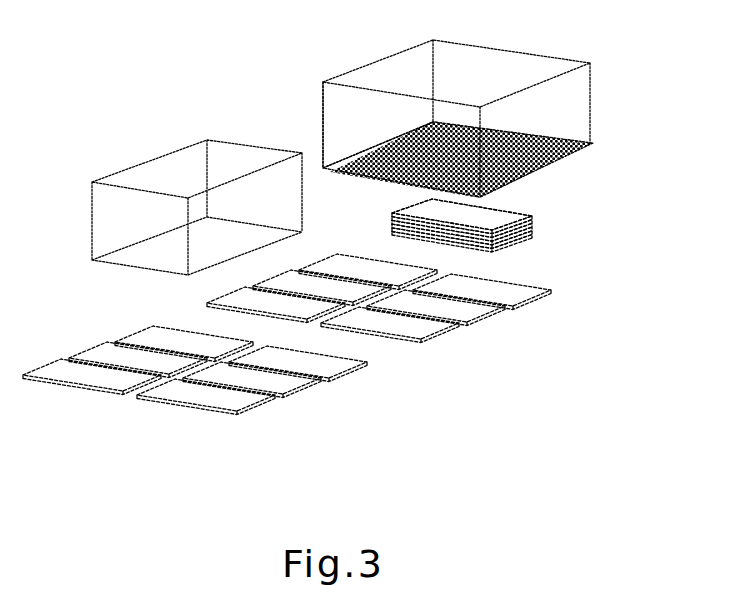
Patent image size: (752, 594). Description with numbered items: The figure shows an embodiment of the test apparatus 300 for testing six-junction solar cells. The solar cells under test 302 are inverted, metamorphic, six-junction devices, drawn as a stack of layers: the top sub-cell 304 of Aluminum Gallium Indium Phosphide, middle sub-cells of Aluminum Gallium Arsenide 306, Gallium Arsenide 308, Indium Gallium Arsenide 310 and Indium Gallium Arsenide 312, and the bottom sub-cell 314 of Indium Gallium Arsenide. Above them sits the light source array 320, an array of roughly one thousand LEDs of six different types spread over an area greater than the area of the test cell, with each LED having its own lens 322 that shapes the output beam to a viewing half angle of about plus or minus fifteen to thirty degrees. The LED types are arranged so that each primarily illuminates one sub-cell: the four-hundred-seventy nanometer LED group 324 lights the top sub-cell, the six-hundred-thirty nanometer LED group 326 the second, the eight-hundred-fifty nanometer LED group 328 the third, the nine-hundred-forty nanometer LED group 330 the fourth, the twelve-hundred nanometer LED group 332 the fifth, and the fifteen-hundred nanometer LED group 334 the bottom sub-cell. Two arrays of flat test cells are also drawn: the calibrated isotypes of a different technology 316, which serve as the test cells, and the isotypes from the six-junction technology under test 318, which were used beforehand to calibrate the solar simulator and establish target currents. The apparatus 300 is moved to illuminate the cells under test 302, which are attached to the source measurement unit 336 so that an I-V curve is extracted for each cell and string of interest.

The test apparatus 300 is at (395, 109).
The solar cells under test 302 is at (516, 271).
The top sub-cell 304 is at (517, 210).
The Aluminum Gallium Arsenide sub-cell 306 is at (517, 221).
The Gallium Arsenide sub-cell 308 is at (517, 232).
The Indium Gallium Arsenide sub-cell 310 is at (517, 243).
The Indium Gallium Arsenide sub-cell 312 is at (517, 254).
The bottom sub-cell 314 is at (517, 265).
The calibrated isotypes of a different technology 316 is at (379, 323).
The isotypes from the 6-junction technology under test 318 is at (276, 370).
The light source array 320 is at (504, 106).
The lens 322 is at (331, 127).
The 470 nm LED group 324 is at (635, 112).
The 630 nm LED group 326 is at (628, 130).
The 850 nm LED group 328 is at (620, 142).
The 940 nm LED group 330 is at (614, 155).
The 1200 nm LED group 332 is at (606, 168).
The 1500 nm LED group 334 is at (594, 183).
The source measurement unit 336 is at (186, 191).